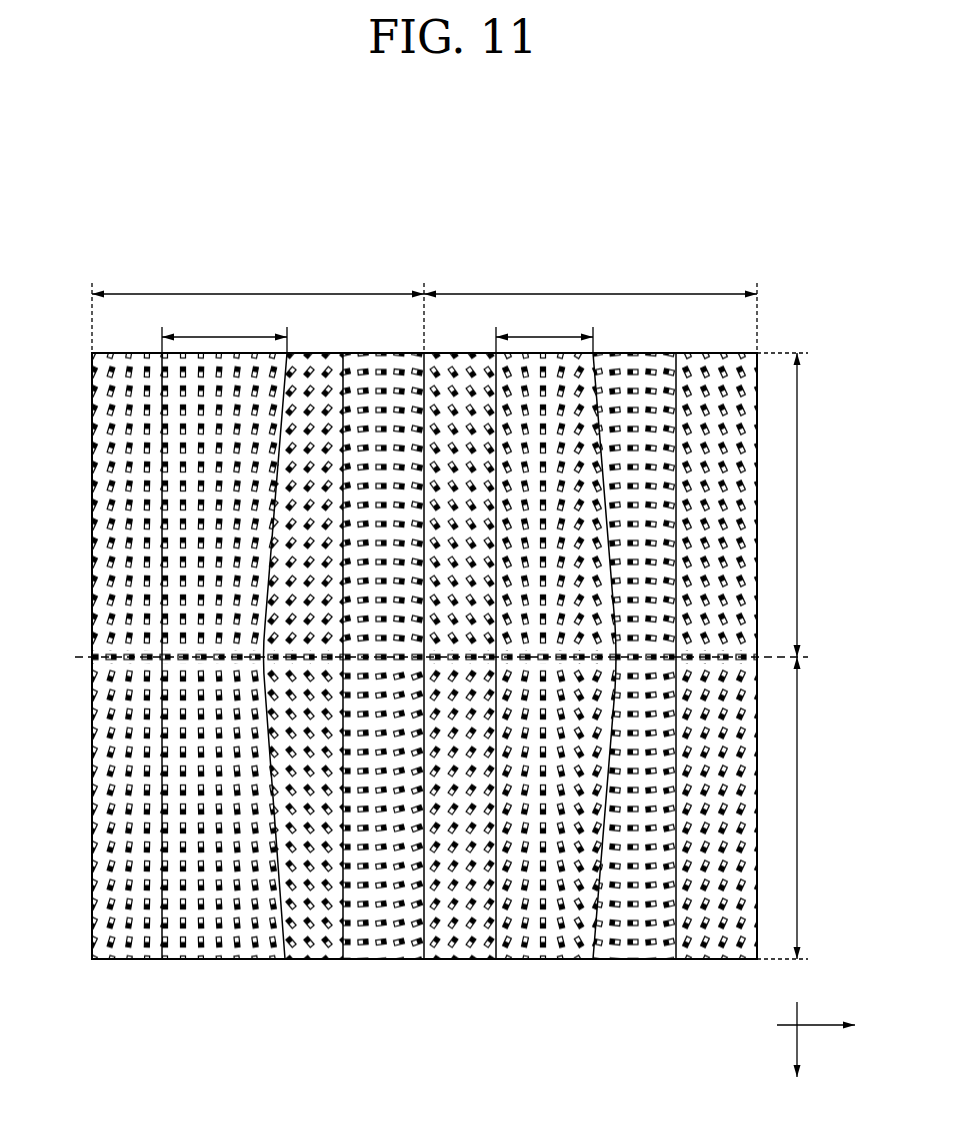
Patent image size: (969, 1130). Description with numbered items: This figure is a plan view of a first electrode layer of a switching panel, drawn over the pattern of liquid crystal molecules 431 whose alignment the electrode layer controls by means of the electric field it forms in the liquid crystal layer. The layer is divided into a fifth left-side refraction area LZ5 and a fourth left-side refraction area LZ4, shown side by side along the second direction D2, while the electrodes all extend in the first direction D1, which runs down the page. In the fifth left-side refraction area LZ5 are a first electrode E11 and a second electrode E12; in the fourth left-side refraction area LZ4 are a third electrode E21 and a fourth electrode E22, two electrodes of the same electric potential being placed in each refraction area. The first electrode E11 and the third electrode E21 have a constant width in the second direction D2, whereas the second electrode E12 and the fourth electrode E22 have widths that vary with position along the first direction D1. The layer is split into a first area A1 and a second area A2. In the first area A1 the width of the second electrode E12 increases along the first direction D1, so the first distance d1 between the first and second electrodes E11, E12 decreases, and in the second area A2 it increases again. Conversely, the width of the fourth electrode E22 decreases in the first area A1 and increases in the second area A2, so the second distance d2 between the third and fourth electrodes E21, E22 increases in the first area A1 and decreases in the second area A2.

The liquid crystal molecules 431 is at (108, 445).
The first electrode E11 is at (165, 930).
The second electrode E12 is at (280, 930).
The third electrode E21 is at (511, 930).
The fourth electrode E22 is at (590, 932).
The fifth left-side refraction area LZ5 is at (258, 310).
The fourth left-side refraction area LZ4 is at (590, 310).
The first distance d1 is at (224, 332).
The second distance d2 is at (544, 332).
The first area A1 is at (791, 505).
The second area A2 is at (791, 808).
The first direction D1 is at (798, 1052).
The second direction D2 is at (830, 1025).